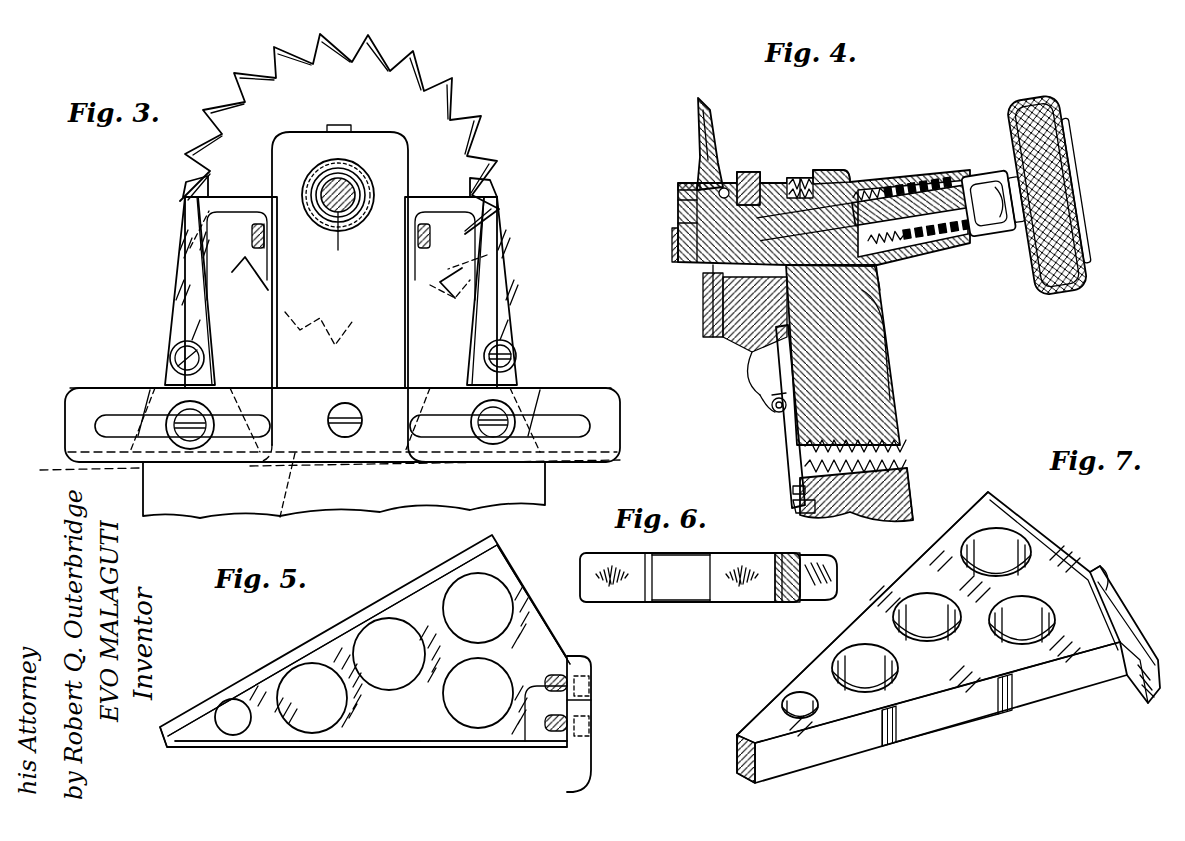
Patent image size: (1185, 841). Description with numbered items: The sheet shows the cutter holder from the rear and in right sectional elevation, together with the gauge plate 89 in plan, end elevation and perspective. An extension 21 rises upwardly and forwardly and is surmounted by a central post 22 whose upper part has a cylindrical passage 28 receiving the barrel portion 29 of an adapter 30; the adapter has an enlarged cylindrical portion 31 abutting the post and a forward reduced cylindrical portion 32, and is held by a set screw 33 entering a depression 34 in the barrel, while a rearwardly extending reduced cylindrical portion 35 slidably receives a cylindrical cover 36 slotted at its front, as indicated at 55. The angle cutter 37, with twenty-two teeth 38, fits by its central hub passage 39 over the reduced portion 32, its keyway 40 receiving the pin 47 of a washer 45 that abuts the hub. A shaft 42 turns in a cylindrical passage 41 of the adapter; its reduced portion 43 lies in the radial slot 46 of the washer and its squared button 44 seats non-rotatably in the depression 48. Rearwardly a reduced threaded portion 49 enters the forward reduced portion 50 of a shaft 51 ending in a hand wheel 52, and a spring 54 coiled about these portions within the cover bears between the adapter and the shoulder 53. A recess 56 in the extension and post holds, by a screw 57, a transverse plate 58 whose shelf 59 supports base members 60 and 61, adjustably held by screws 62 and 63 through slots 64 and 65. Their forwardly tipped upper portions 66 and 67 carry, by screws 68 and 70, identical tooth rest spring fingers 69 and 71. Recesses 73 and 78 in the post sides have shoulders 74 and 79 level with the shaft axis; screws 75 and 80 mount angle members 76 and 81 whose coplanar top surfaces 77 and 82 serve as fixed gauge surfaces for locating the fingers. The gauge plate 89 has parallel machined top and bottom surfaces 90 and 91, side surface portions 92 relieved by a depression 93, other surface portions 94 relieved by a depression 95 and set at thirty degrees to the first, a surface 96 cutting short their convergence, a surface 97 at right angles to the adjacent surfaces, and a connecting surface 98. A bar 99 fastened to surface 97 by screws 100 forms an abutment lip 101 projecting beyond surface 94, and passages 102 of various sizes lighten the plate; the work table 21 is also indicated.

In FIG. 3, the extension 21 is at (535, 498).
In FIG. 4, the extension 21 is at (913, 488).
In FIG. 3, the central post 22 is at (373, 147).
In FIG. 4, the central post 22 is at (878, 395).
In FIG. 4, the cylindrical passage 28 is at (886, 318).
In FIG. 4, the barrel portion 29 is at (836, 172).
In FIG. 4, the adapter 30 is at (773, 166).
In FIG. 4, the enlarged cylindrical portion 31 is at (750, 183).
In FIG. 4, the reduced cylindrical portion 32 is at (738, 338).
In FIG. 3, the set screw 33 is at (340, 126).
In FIG. 4, the set screw 33 is at (803, 178).
In FIG. 4, the depression 34 is at (826, 172).
In FIG. 4, the rearwardly extending reduced cylindrical portion 35 is at (877, 192).
In FIG. 3, the cylindrical cover 36 is at (378, 182).
In FIG. 4, the cylindrical cover 36 is at (985, 172).
In FIG. 3, the angle cutter 37 is at (430, 116).
In FIG. 4, the angle cutter 37 is at (700, 140).
In FIG. 3, the teeth 38 is at (183, 193).
In FIG. 4, the teeth 38 is at (696, 106).
In FIG. 4, the central hub passage 39 is at (748, 358).
In FIG. 4, the keyway 40 is at (728, 188).
In FIG. 4, the cylindrical passage 41 is at (890, 296).
In FIG. 3, the shaft 42 is at (325, 175).
In FIG. 4, the shaft 42 is at (853, 188).
In FIG. 4, the reduced portion 43 is at (680, 255).
In FIG. 4, the button 44 is at (690, 265).
In FIG. 4, the washer 45 is at (678, 185).
In FIG. 4, the radial slot 46 is at (703, 300).
In FIG. 4, the pin 47 is at (678, 203).
In FIG. 4, the depression 48 is at (712, 322).
In FIG. 4, the reduced threaded portion 49 is at (922, 186).
In FIG. 4, the forward reduced portion 50 is at (945, 260).
In FIG. 4, the shaft 51 is at (1005, 238).
In FIG. 4, the hand wheel 52 is at (1040, 126).
In FIG. 4, the shoulder 53 is at (985, 240).
In FIG. 3, the spring 54 is at (336, 230).
In FIG. 4, the spring 54 is at (900, 196).
In FIG. 3, the slot 55 is at (326, 160).
In FIG. 4, the recess 56 is at (895, 420).
In FIG. 3, the screw 57 is at (345, 432).
In FIG. 4, the screw 57 is at (905, 444).
In FIG. 3, the transverse plate 58 is at (66, 418).
In FIG. 4, the transverse plate 58 is at (842, 492).
In FIG. 3, the shelf 59 is at (66, 460).
In FIG. 4, the shelf 59 is at (796, 505).
In FIG. 3, the base member 60 is at (155, 430).
In FIG. 3, the base member 61 is at (530, 420).
In FIG. 4, the base member 61 is at (792, 448).
In FIG. 3, the screw 62 is at (191, 432).
In FIG. 3, the screw 63 is at (490, 432).
In FIG. 4, the screw 63 is at (792, 480).
In FIG. 3, the slot 64 is at (112, 420).
In FIG. 3, the slot 65 is at (578, 412).
In FIG. 3, the upper portion 66 is at (172, 350).
In FIG. 3, the upper portion 67 is at (513, 360).
In FIG. 4, the upper portion 67 is at (779, 432).
In FIG. 3, the screw 68 is at (175, 358).
In FIG. 3, the spring finger 69 is at (185, 285).
In FIG. 3, the screw 70 is at (512, 346).
In FIG. 4, the screw 70 is at (775, 414).
In FIG. 3, the spring finger 71 is at (502, 272).
In FIG. 4, the spring finger 71 is at (756, 396).
In FIG. 3, the recess 73 is at (280, 192).
In FIG. 3, the shoulder 74 is at (270, 200).
In FIG. 3, the screw 75 is at (252, 232).
In FIG. 3, the angle member 76 is at (272, 236).
In FIG. 3, the top surface 77 is at (234, 197).
In FIG. 3, the recess 78 is at (408, 236).
In FIG. 3, the abutment shoulder 79 is at (405, 196).
In FIG. 3, the screw 80 is at (430, 232).
In FIG. 3, the angle member 81 is at (410, 258).
In FIG. 3, the top surface 82 is at (492, 190).
In FIG. 5, the gauge plate 89 is at (516, 562).
In FIG. 6, the gauge plate 89 is at (694, 613).
In FIG. 7, the gauge plate 89 is at (1070, 531).
In FIG. 5, the top surface 90 is at (362, 726).
In FIG. 6, the top surface 90 is at (690, 560).
In FIG. 7, the top surface 90 is at (1000, 520).
In FIG. 6, the bottom surface 91 is at (740, 602).
In FIG. 5, the surface portions 92 is at (420, 580).
In FIG. 6, the surface portions 92 is at (608, 590).
In FIG. 7, the surface portions 92 is at (933, 548).
In FIG. 5, the depression 93 is at (337, 628).
In FIG. 6, the depression 93 is at (677, 590).
In FIG. 7, the depression 93 is at (870, 612).
In FIG. 5, the surface portions 94 is at (256, 748).
In FIG. 6, the surface portions 94 is at (787, 602).
In FIG. 7, the surface portions 94 is at (846, 748).
In FIG. 5, the depression 95 is at (398, 745).
In FIG. 7, the depression 95 is at (963, 708).
In FIG. 5, the surface 96 is at (168, 740).
In FIG. 6, the surface 96 is at (790, 585).
In FIG. 7, the surface 96 is at (738, 756).
In FIG. 5, the surface 97 is at (531, 745).
In FIG. 7, the surface 97 is at (1102, 593).
In FIG. 5, the surface 98 is at (516, 572).
In FIG. 7, the surface 98 is at (1075, 562).
In FIG. 5, the bar 99 is at (590, 704).
In FIG. 7, the bar 99 is at (1120, 620).
In FIG. 5, the screws 100 is at (578, 688).
In FIG. 5, the abutment lip 101 is at (586, 780).
In FIG. 6, the abutment lip 101 is at (822, 580).
In FIG. 7, the abutment lip 101 is at (1138, 690).
In FIG. 5, the passages 102 is at (376, 626).
In FIG. 7, the passages 102 is at (906, 606).